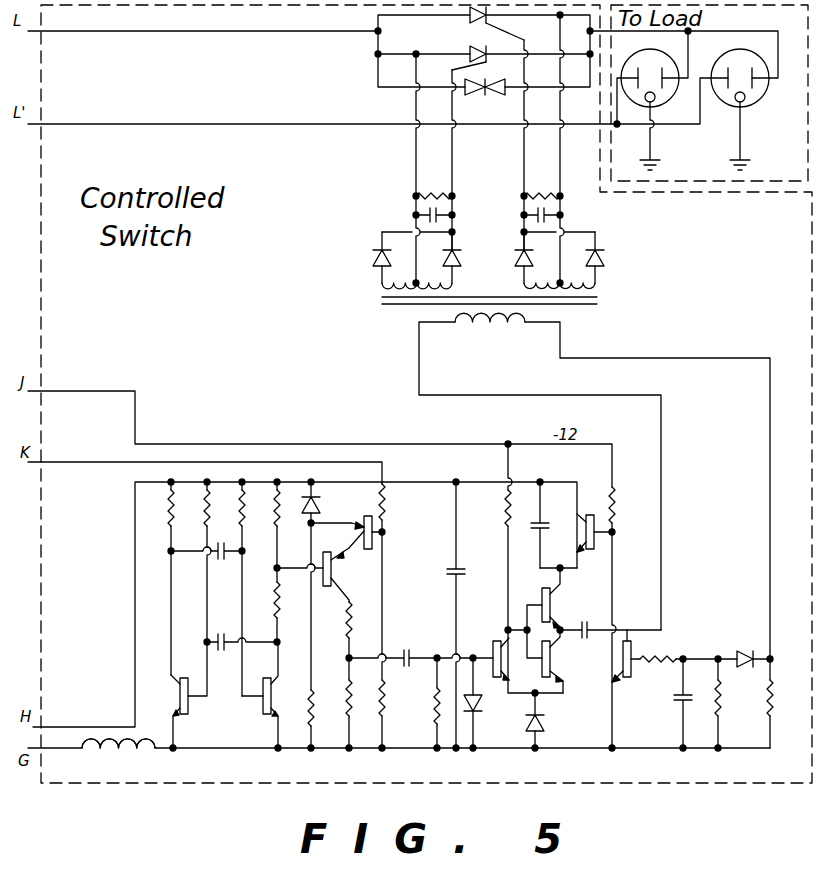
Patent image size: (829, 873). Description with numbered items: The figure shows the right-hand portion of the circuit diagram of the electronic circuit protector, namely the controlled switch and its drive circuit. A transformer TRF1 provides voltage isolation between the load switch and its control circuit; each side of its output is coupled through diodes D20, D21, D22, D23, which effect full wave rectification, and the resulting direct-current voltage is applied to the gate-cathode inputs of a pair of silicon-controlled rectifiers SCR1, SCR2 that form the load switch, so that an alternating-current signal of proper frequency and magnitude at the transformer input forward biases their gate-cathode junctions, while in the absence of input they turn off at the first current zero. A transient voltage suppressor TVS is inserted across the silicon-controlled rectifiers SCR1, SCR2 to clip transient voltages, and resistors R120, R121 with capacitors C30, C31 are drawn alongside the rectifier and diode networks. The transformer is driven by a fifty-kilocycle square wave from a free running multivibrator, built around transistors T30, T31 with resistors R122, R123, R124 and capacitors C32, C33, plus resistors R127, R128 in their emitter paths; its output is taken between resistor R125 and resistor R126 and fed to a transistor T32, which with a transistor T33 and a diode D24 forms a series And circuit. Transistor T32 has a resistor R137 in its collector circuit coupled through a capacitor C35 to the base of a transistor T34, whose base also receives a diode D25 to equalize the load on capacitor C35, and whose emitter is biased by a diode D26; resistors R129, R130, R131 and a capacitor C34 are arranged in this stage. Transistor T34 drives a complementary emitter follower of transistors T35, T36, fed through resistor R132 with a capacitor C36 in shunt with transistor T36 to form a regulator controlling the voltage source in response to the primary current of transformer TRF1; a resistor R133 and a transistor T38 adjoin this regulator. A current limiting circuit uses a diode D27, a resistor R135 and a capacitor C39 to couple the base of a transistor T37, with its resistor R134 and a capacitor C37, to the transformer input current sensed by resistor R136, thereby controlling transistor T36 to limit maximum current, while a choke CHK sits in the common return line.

The silicon-controlled rectifier SCR1 is at (466, 22).
The silicon-controlled rectifier SCR2 is at (462, 64).
The transient voltage suppressor TVS is at (497, 96).
The resistor R120 is at (428, 190).
The resistor R121 is at (540, 181).
The capacitor C30 is at (428, 215).
The capacitor C31 is at (546, 214).
The diode D20 is at (372, 258).
The diode D21 is at (462, 262).
The diode D22 is at (516, 265).
The diode D23 is at (603, 265).
The transformer TRF1 is at (366, 289).
The choke CHK is at (125, 752).
The resistor R122 is at (166, 500).
The resistor R123 is at (207, 500).
The resistor R124 is at (244, 500).
The resistor R125 is at (279, 500).
The resistor R126 is at (272, 590).
The resistor R127 is at (312, 732).
The resistor R128 is at (347, 728).
The resistor R129 is at (386, 702).
The resistor R130 is at (460, 770).
The resistor R131 is at (388, 496).
The resistor R132 is at (505, 500).
The resistor R133 is at (614, 505).
The resistor R134 is at (664, 664).
The resistor R135 is at (714, 718).
The resistor R136 is at (774, 718).
The resistor R137 is at (352, 612).
The capacitor C32 is at (222, 562).
The capacitor C33 is at (222, 652).
The capacitor C34 is at (446, 572).
The capacitor C35 is at (408, 650).
The capacitor C36 is at (541, 520).
The capacitor C37 is at (588, 620).
The capacitor C39 is at (680, 705).
The diode D24 is at (318, 509).
The diode D25 is at (486, 705).
The diode D26 is at (542, 724).
The diode D27 is at (745, 651).
The transistor T30 is at (190, 704).
The transistor T31 is at (262, 715).
The transistor T32 is at (333, 568).
The transistor T33 is at (374, 546).
The transistor T34 is at (493, 650).
The transistor T35 is at (552, 608).
The transistor T36 is at (551, 659).
The transistor T37 is at (633, 652).
The transistor T38 is at (598, 520).